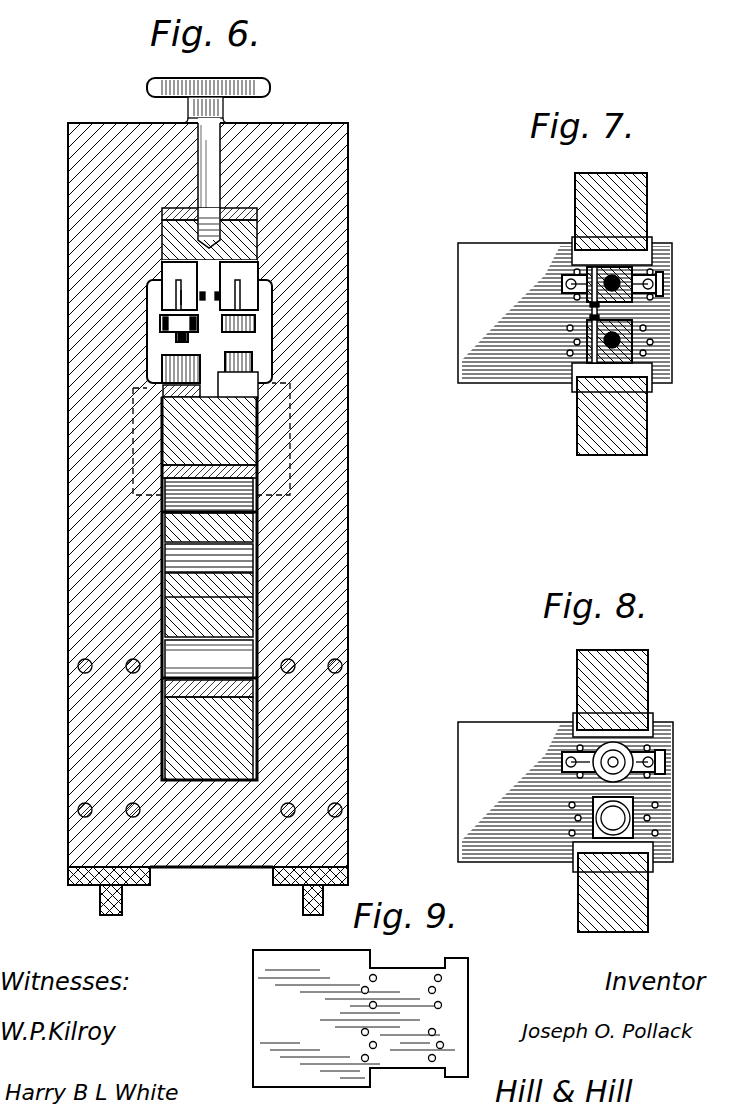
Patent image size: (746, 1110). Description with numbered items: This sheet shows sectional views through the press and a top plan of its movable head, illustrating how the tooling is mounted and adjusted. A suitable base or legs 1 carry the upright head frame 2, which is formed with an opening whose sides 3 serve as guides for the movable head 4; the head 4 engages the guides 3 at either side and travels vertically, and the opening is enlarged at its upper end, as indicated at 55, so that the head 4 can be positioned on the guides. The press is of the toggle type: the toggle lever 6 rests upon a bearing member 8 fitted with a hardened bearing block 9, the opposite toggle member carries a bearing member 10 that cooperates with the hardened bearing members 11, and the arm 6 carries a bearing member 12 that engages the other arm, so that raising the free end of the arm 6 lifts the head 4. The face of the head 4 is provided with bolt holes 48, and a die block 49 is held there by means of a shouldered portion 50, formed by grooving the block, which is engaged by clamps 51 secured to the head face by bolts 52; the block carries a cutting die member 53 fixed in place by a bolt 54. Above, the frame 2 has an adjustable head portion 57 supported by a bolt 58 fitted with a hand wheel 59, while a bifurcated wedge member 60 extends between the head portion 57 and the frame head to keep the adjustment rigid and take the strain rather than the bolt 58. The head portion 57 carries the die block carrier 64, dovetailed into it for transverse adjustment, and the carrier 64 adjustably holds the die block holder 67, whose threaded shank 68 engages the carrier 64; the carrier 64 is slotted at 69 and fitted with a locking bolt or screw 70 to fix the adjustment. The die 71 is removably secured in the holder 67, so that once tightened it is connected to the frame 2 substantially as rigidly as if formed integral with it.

In FIG. 6, the base or legs 1 is at (103, 906).
In FIG. 6, the head frame 2 is at (335, 492).
In FIG. 7, the head frame 2 is at (647, 428).
In FIG. 8, the head frame 2 is at (648, 668).
In FIG. 6, the guides 3 is at (257, 585).
In FIG. 6, the movable head 4 is at (235, 425).
In FIG. 7, the movable head 4 is at (672, 348).
In FIG. 8, the movable head 4 is at (673, 822).
In FIG. 9, the movable head 4 is at (262, 1025).
In FIG. 6, the toggle lever 6 is at (225, 617).
In FIG. 6, the bearing member 8 is at (235, 730).
In FIG. 6, the bearing block 9 is at (225, 652).
In FIG. 6, the bearing member 10 is at (180, 496).
In FIG. 6, the bearing members 11 is at (165, 472).
In FIG. 6, the bearing member 12 is at (170, 573).
In FIG. 7, the bolt holes 48 is at (654, 298).
In FIG. 8, the bolt holes 48 is at (650, 777).
In FIG. 9, the bolt holes 48 is at (442, 1005).
In FIG. 6, the die block 49 is at (170, 365).
In FIG. 8, the die block 49 is at (630, 755).
In FIG. 6, the shouldered portion 50 is at (200, 395).
In FIG. 6, the clamps 51 is at (165, 388).
In FIG. 7, the clamps 51 is at (667, 270).
In FIG. 8, the clamps 51 is at (566, 763).
In FIG. 7, the bolts 52 is at (666, 284).
In FIG. 8, the bolts 52 is at (667, 756).
In FIG. 8, the cutting die member 53 is at (600, 762).
In FIG. 8, the bolt 54 is at (640, 762).
In FIG. 6, the enlarged end of opening 55 is at (272, 335).
In FIG. 6, the adjustable head portion 57 is at (245, 238).
In FIG. 6, the bolt 58 is at (218, 145).
In FIG. 6, the hand wheel 59 is at (250, 83).
In FIG. 6, the wedge member 60 is at (258, 212).
In FIG. 6, the die block carrier 64 is at (168, 293).
In FIG. 7, the die block carrier 64 is at (628, 270).
In FIG. 6, the die block holder 67 is at (168, 323).
In FIG. 6, the threaded shank 68 is at (182, 290).
In FIG. 7, the threaded shank 68 is at (612, 275).
In FIG. 7, the slot 69 is at (572, 278).
In FIG. 6, the locking bolt or screw 70 is at (202, 305).
In FIG. 7, the locking bolt or screw 70 is at (594, 308).
In FIG. 6, the die 71 is at (188, 337).